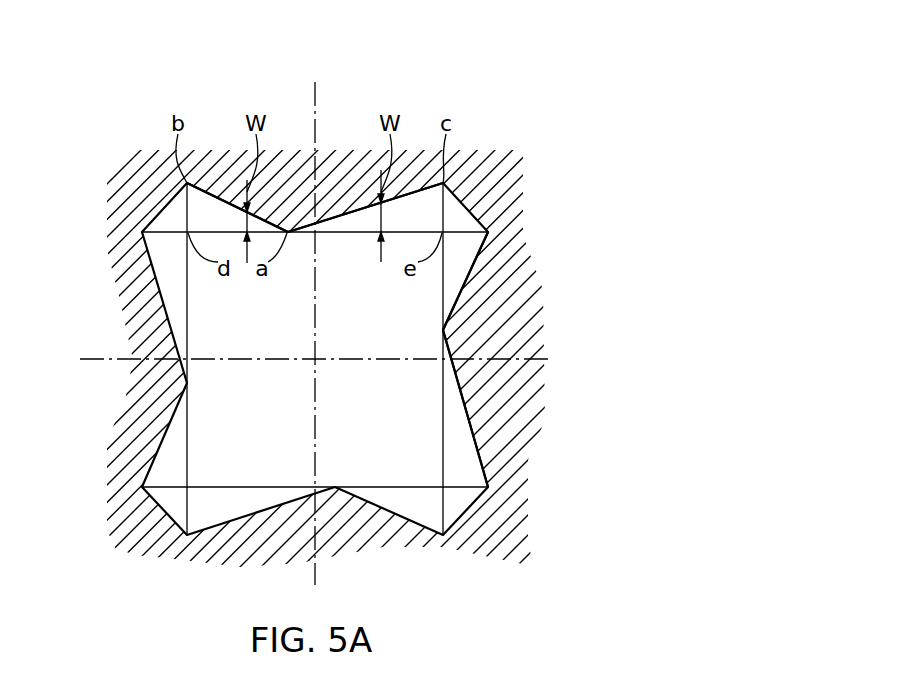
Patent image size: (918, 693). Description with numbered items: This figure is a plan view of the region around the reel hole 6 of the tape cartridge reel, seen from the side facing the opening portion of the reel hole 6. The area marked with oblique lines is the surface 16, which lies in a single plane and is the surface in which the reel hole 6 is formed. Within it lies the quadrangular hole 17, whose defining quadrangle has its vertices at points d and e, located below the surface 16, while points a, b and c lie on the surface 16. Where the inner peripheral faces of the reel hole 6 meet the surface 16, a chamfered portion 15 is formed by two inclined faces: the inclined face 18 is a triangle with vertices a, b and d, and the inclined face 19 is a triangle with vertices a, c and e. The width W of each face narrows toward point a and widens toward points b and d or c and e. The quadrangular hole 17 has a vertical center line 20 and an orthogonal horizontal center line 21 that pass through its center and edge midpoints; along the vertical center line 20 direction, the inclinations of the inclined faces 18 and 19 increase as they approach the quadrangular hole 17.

The reel hole 6 is at (104, 305).
The chamfered portion 15 is at (475, 266).
The surface 16 is at (472, 303).
The quadrangular hole 17 is at (408, 436).
The inclined face 18 is at (200, 207).
The inclined face 19 is at (408, 205).
The vertical center line 20 is at (315, 102).
The horizontal center line 21 is at (548, 359).